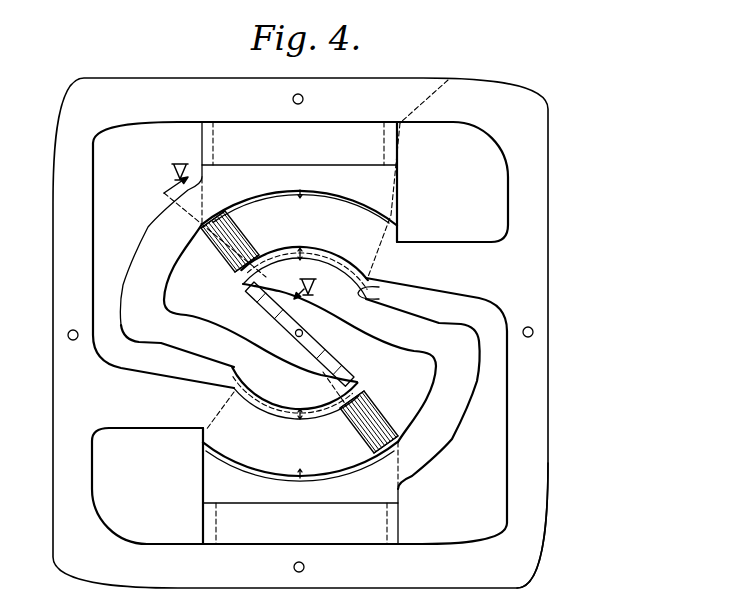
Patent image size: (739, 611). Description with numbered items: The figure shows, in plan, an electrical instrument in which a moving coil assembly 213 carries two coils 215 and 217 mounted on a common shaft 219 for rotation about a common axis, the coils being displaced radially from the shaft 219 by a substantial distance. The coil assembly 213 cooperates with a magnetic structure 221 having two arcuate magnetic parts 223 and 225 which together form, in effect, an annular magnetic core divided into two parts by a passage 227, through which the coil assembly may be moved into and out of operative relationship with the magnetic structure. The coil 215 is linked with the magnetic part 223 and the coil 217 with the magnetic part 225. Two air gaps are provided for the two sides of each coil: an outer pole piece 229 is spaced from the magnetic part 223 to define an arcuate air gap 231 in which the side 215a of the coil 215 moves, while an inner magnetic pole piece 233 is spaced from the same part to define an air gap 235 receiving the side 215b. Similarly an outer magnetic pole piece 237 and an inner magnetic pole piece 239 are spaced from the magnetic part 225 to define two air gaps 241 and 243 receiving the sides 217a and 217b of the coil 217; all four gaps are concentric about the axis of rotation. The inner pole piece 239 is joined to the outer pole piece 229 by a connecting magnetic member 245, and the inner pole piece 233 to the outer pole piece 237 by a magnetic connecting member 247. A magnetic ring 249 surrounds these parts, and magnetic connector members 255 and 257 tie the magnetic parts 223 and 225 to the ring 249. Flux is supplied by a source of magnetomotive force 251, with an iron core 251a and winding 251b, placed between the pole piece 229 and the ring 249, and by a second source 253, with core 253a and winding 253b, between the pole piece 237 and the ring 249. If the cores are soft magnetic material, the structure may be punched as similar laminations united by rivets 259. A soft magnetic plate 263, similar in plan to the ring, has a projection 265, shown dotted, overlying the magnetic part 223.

The moving coil assembly 213 is at (280, 322).
The coil 215 is at (221, 241).
The side of coil 215 215a is at (203, 243).
The side of coil 215 215b is at (237, 278).
The coil 217 is at (374, 394).
The side of coil 217 217a is at (399, 429).
The side of coil 217 217b is at (358, 386).
The shaft 219 is at (303, 336).
The magnetic structure 221 is at (604, 384).
The arcuate magnetic part 223 is at (335, 212).
The arcuate magnetic part 225 is at (345, 452).
The passage 227 is at (238, 310).
The outer pole piece 229 is at (399, 197).
The arcuate air gap 231 is at (287, 196).
The inner magnetic pole piece 233 is at (385, 298).
The air gap 235 is at (347, 267).
The outer magnetic pole piece 237 is at (205, 487).
The inner magnetic pole piece 239 is at (232, 368).
The air gap 241 is at (227, 455).
The air gap 243 is at (261, 394).
The connecting magnetic member 245 is at (147, 233).
The magnetic connecting member 247 is at (448, 433).
The magnetic ring 249 is at (508, 551).
The source of magnetomotive force 251 is at (399, 160).
The iron core 251a is at (439, 93).
The winding 251b is at (398, 152).
The source of magnetomotive force 253 is at (399, 510).
The magnetic core 253a is at (399, 500).
The winding 253b is at (399, 530).
The magnetic connector member 255 is at (467, 240).
The magnetic connector member 257 is at (143, 429).
The rivets 259 is at (532, 331).
The plate 263 is at (253, 299).
The projection 265 is at (380, 262).